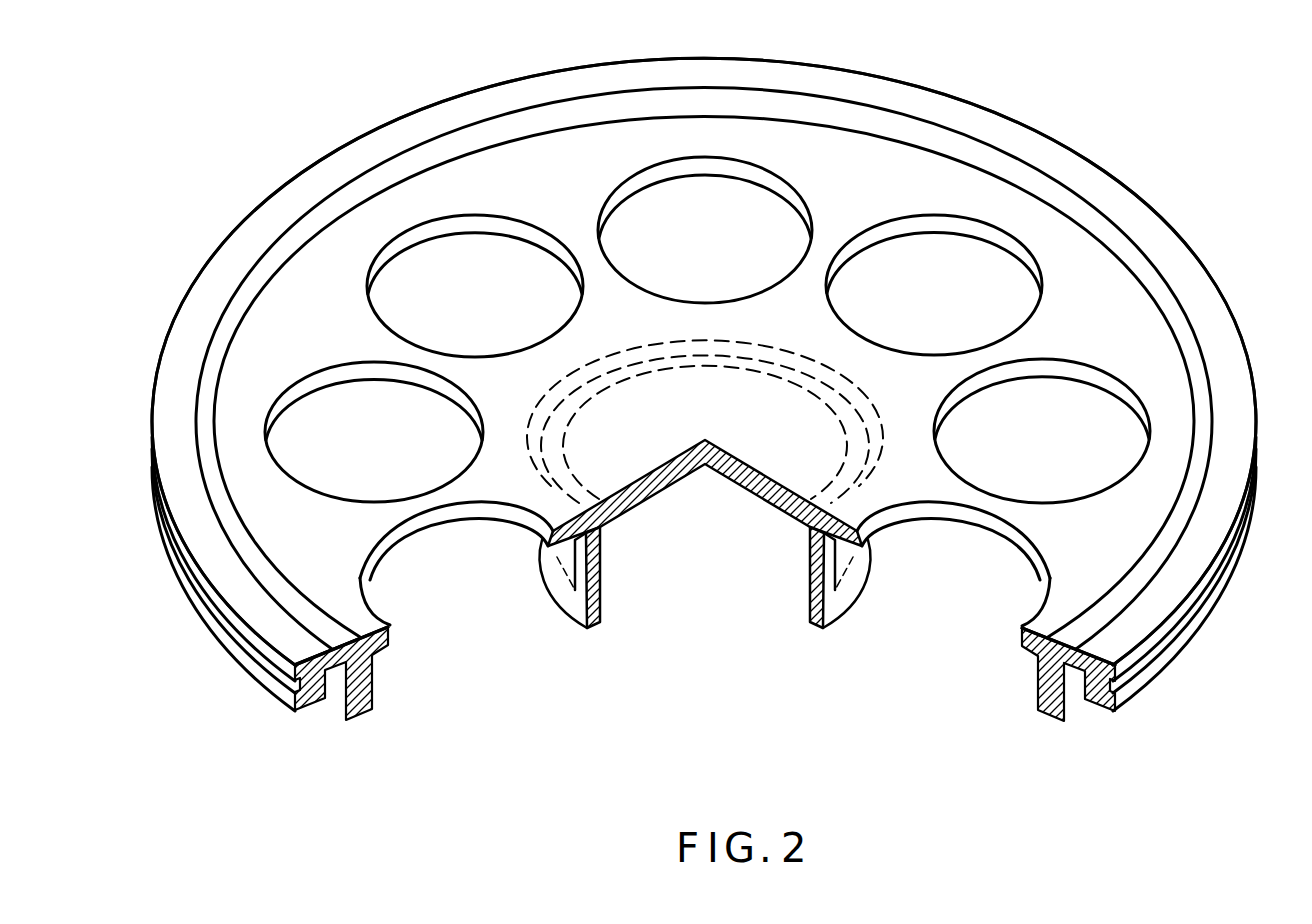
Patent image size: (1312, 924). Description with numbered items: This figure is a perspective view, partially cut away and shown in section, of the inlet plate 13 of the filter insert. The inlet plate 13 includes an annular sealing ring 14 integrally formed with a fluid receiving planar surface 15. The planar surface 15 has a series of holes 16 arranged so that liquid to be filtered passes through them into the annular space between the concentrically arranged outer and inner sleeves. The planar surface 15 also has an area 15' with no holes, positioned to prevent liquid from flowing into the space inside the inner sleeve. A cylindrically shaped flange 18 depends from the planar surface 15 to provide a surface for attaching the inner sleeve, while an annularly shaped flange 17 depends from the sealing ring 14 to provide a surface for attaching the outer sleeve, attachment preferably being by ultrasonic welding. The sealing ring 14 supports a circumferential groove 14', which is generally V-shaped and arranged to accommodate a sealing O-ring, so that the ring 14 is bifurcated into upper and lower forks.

The inlet plate 13 is at (1128, 138).
The annular sealing ring 14 is at (704, 367).
The circumferential groove 14' is at (704, 593).
The fluid receiving planar surface 15 is at (795, 445).
The area having no holes 15' is at (705, 421).
The holes 16 is at (360, 565).
The annularly shaped flange 17 is at (338, 697).
The cylindrically shaped flange 18 is at (570, 587).